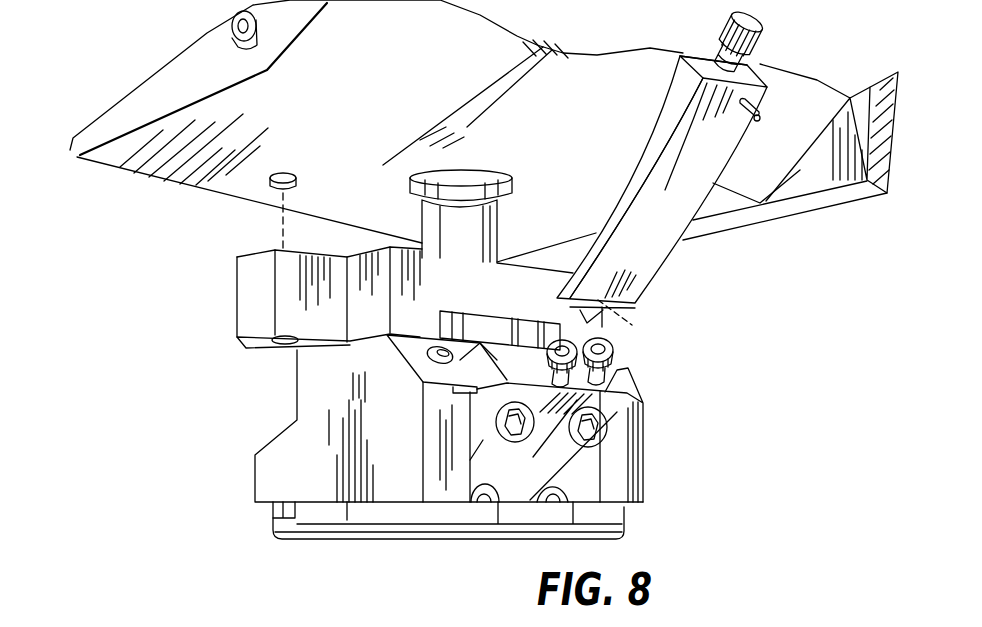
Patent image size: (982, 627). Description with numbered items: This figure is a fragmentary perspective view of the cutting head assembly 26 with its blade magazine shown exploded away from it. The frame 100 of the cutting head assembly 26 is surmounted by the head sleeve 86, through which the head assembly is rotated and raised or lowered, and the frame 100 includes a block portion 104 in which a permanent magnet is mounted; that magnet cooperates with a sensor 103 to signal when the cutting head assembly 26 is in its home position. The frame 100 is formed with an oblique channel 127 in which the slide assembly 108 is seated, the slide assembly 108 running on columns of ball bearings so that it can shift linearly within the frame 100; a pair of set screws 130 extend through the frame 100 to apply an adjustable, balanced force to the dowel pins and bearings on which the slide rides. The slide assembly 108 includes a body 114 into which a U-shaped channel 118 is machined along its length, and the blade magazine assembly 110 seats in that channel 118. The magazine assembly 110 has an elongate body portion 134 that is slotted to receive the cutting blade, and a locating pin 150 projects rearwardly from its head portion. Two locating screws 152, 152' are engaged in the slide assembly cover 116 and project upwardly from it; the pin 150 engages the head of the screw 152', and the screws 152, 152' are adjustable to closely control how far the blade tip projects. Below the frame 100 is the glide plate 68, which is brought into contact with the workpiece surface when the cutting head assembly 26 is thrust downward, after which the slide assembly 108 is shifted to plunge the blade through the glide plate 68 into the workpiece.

The cutting head assembly 26 is at (236, 207).
The sensor 103 is at (292, 173).
The set screws 130 is at (676, 84).
The elongate body portion 134 is at (703, 147).
The locating pin 150 is at (758, 118).
The head sleeve 86 is at (480, 227).
The blade magazine assembly 110 is at (655, 257).
The block portion 104 is at (258, 287).
The frame 100 is at (310, 432).
The glide plate 68 is at (275, 537).
The U-shaped channel 118 is at (523, 372).
The body 114 is at (497, 352).
The slide assembly 108 is at (602, 447).
The slide assembly cover 116 is at (615, 412).
The locating screw 152 is at (636, 356).
The locating screw 152' is at (540, 332).
The oblique channel 127 is at (507, 383).